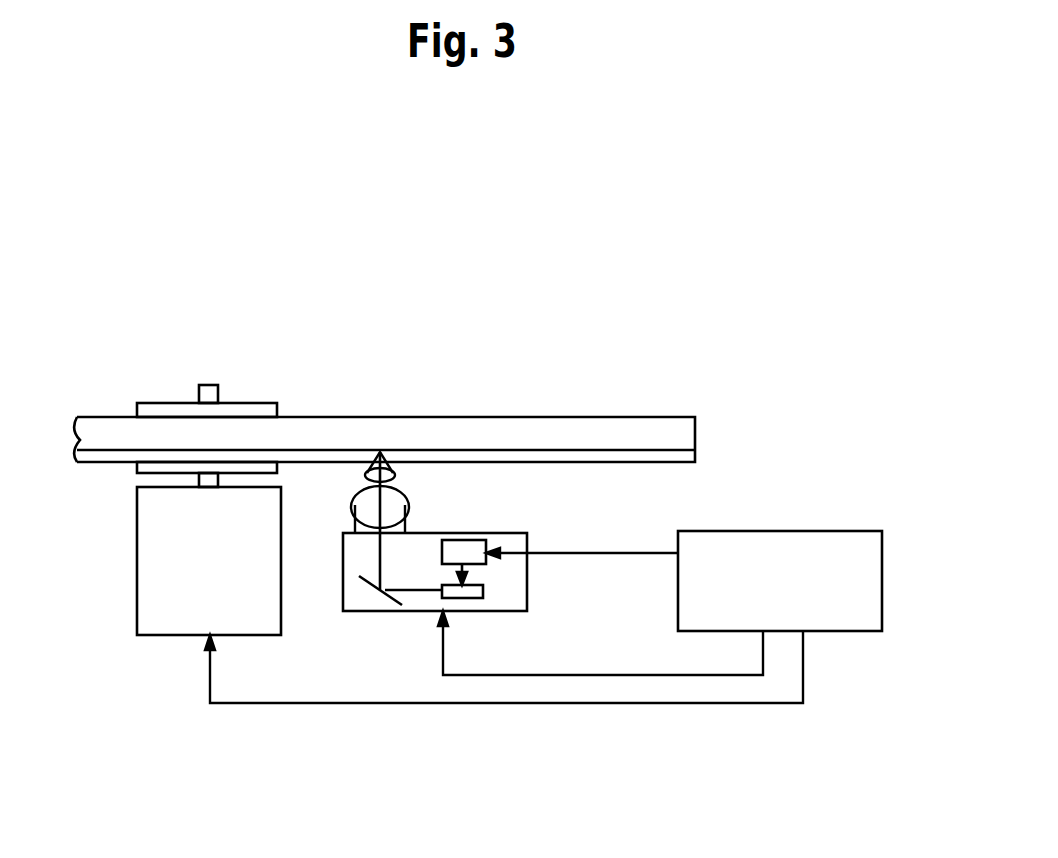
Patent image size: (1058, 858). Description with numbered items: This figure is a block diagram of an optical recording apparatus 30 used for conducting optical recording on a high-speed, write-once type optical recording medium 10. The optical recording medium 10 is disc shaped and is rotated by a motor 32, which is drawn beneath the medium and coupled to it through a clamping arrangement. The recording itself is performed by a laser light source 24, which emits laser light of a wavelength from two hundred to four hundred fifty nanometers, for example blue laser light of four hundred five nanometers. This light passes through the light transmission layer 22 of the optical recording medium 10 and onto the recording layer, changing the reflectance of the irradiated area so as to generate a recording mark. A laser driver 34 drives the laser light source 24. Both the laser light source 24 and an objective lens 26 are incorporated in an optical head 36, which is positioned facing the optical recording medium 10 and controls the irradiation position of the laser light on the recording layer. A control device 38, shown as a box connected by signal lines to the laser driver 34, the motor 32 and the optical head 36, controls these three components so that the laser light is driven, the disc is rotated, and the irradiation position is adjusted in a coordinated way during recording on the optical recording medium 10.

The optical recording medium 10 is at (420, 404).
The light transmission layer 22 is at (688, 453).
The laser light source 24 is at (478, 598).
The objective lens 26 is at (343, 470).
The optical recording apparatus 30 is at (662, 740).
The motor 32 is at (270, 636).
The laser driver 34 is at (460, 540).
The optical head 36 is at (451, 558).
The control device 38 is at (885, 575).